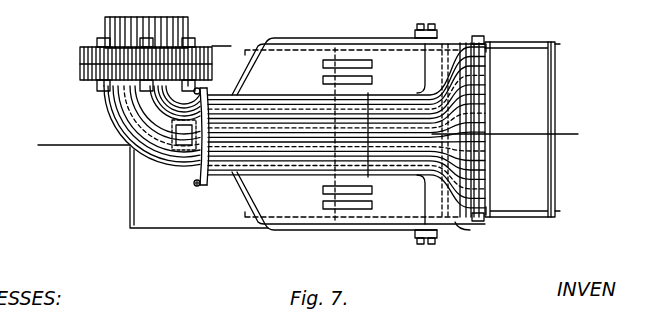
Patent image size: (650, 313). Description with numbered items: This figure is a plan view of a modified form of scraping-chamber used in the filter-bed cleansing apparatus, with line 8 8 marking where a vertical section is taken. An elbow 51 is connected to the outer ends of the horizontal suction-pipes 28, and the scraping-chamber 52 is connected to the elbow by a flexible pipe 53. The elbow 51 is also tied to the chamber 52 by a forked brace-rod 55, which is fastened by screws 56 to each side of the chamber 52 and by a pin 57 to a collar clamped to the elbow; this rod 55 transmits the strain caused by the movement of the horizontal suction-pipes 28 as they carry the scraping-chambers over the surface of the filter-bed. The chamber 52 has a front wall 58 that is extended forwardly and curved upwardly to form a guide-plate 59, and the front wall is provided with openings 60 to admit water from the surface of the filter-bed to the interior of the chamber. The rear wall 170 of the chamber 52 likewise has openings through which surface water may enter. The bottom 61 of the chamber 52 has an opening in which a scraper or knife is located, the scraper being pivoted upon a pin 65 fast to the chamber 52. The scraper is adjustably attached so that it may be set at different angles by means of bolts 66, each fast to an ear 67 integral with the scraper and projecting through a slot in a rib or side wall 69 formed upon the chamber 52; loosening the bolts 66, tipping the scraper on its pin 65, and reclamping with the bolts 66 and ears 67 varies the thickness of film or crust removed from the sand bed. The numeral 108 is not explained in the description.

The horizontal suction-pipes 28 is at (163, 27).
The elbow 51 is at (120, 110).
The pin 57 is at (180, 172).
The drain cock 108 is at (200, 188).
The guide-plate 59 is at (145, 178).
The section line 8 8 is at (306, 146).
The forked brace-rod 55 is at (350, 40).
The flexible pipe 53 is at (288, 121).
The front wall 58 is at (324, 152).
The openings 60 is at (355, 63).
The scraping-chamber 52 is at (480, 160).
The bottom 61 is at (522, 85).
The rear wall 170 is at (488, 97).
The bolts 66 is at (482, 38).
The ear 67 is at (488, 50).
The rib or side wall 69 is at (557, 42).
The screws 56 is at (437, 25).
The pin 65 is at (453, 223).